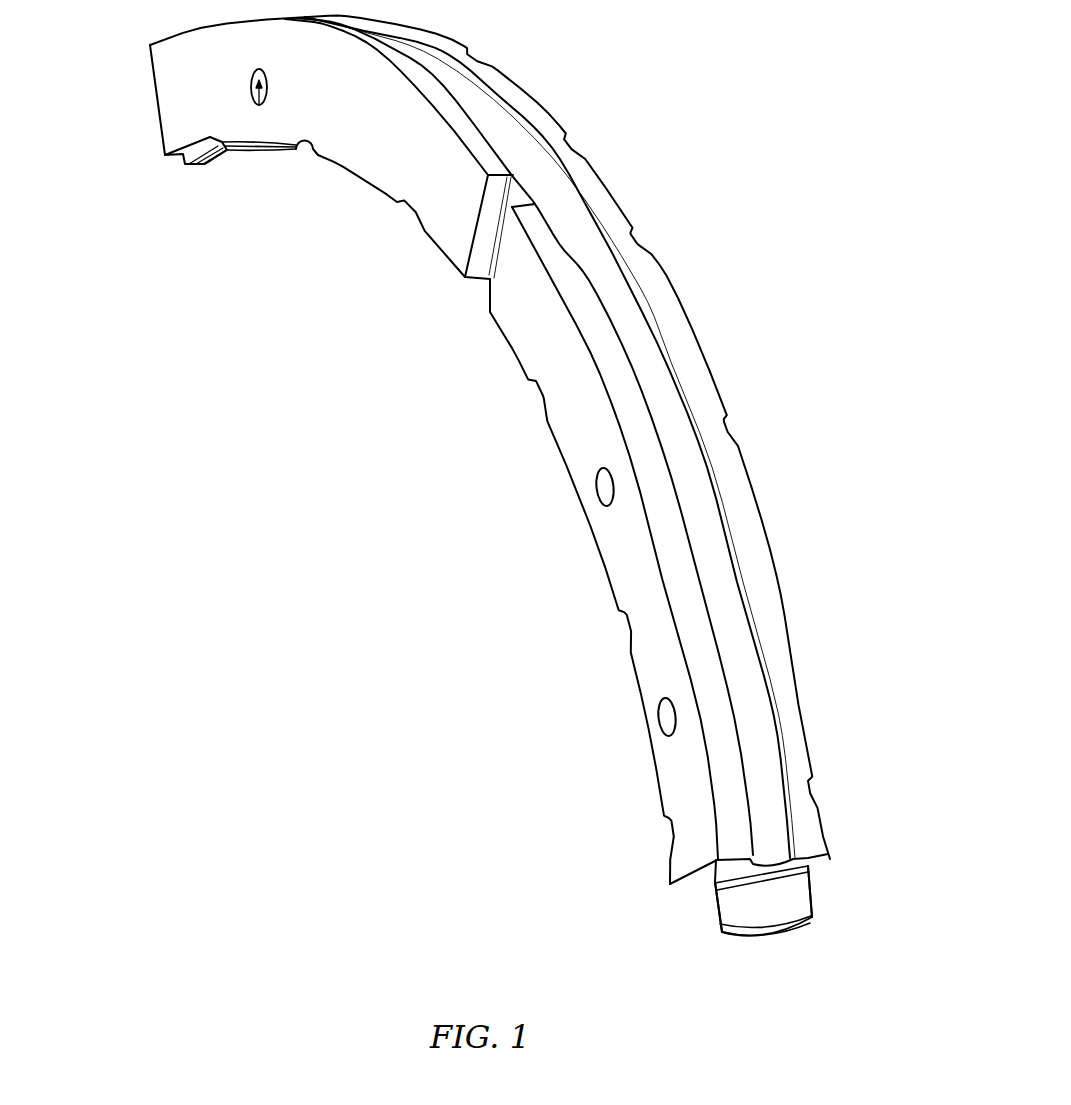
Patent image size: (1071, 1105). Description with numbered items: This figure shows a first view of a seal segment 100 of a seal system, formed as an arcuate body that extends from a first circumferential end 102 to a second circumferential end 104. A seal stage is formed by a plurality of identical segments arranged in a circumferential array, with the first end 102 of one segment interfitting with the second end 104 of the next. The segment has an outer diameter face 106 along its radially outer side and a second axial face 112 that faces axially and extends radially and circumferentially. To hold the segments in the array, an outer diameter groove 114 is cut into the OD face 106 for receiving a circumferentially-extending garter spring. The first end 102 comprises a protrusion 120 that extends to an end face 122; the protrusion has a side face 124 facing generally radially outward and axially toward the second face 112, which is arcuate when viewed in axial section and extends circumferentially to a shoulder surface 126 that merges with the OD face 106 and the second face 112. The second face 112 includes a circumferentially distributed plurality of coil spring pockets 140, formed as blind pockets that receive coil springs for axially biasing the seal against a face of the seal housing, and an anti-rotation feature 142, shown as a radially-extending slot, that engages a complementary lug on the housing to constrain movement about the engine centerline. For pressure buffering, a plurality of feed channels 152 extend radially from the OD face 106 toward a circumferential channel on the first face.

The seal segment 100 is at (703, 127).
The first circumferential end 102 is at (770, 963).
The second circumferential end 104 is at (143, 103).
The outer diameter face 106 is at (698, 370).
The second axial face 112 is at (623, 563).
The outer diameter groove 114 is at (627, 315).
The protrusion 120 is at (830, 886).
The end face 122 is at (793, 928).
The side face 124 is at (735, 905).
The shoulder surface 126 is at (698, 875).
The coil spring pocket 140 is at (259, 104).
The anti-rotation feature 142 is at (477, 292).
The feed channel 152 is at (736, 430).